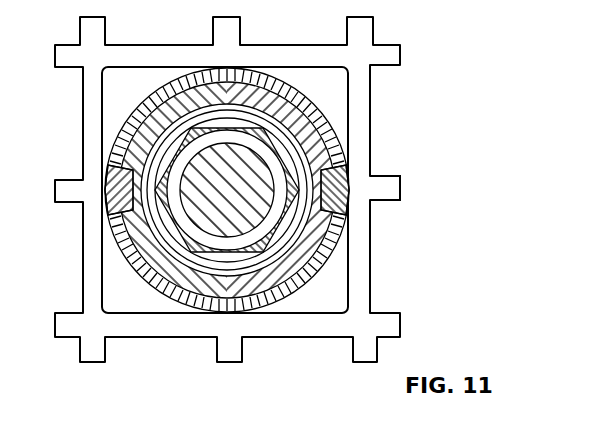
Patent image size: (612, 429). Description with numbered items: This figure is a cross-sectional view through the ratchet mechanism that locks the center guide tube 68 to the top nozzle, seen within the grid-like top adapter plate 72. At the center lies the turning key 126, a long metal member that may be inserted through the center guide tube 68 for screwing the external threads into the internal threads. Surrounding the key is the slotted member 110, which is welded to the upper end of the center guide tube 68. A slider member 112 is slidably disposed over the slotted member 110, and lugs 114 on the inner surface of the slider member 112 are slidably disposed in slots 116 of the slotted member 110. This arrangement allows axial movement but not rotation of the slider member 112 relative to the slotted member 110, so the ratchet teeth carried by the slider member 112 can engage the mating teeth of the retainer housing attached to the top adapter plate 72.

The top adapter plate 72 is at (385, 54).
The slider member 112 is at (320, 108).
The turning key 126 is at (253, 178).
The lugs 114 is at (398, 190).
The slots 116 is at (320, 217).
The slotted member 110 is at (322, 228).
The center guide tube 68 is at (313, 262).